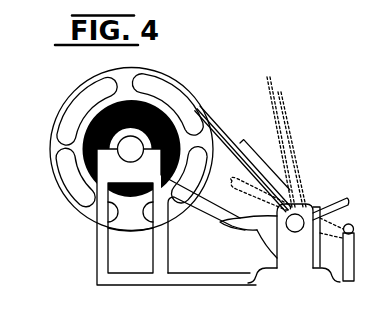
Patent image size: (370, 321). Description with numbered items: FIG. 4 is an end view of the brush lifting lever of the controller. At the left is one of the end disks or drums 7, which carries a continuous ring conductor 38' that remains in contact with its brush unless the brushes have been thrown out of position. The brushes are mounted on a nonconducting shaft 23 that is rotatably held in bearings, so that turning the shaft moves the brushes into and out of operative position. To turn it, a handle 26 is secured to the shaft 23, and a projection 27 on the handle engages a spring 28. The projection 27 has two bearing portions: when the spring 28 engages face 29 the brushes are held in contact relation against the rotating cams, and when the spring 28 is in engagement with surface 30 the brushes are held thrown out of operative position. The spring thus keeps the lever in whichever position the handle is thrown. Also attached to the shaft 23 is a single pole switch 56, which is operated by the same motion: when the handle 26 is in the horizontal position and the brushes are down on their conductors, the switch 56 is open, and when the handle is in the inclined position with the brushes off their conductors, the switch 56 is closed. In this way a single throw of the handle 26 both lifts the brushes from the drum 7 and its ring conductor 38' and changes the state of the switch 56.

The continuous ring conductor 38' is at (108, 149).
The end disk or drum 7 is at (150, 104).
The nonconducting shaft 23 is at (297, 221).
The handle 26 is at (223, 225).
The projection 27 is at (298, 236).
The spring 28 is at (286, 272).
The face 29 is at (275, 250).
The surface 30 is at (320, 270).
The single pole switch 56 is at (345, 197).